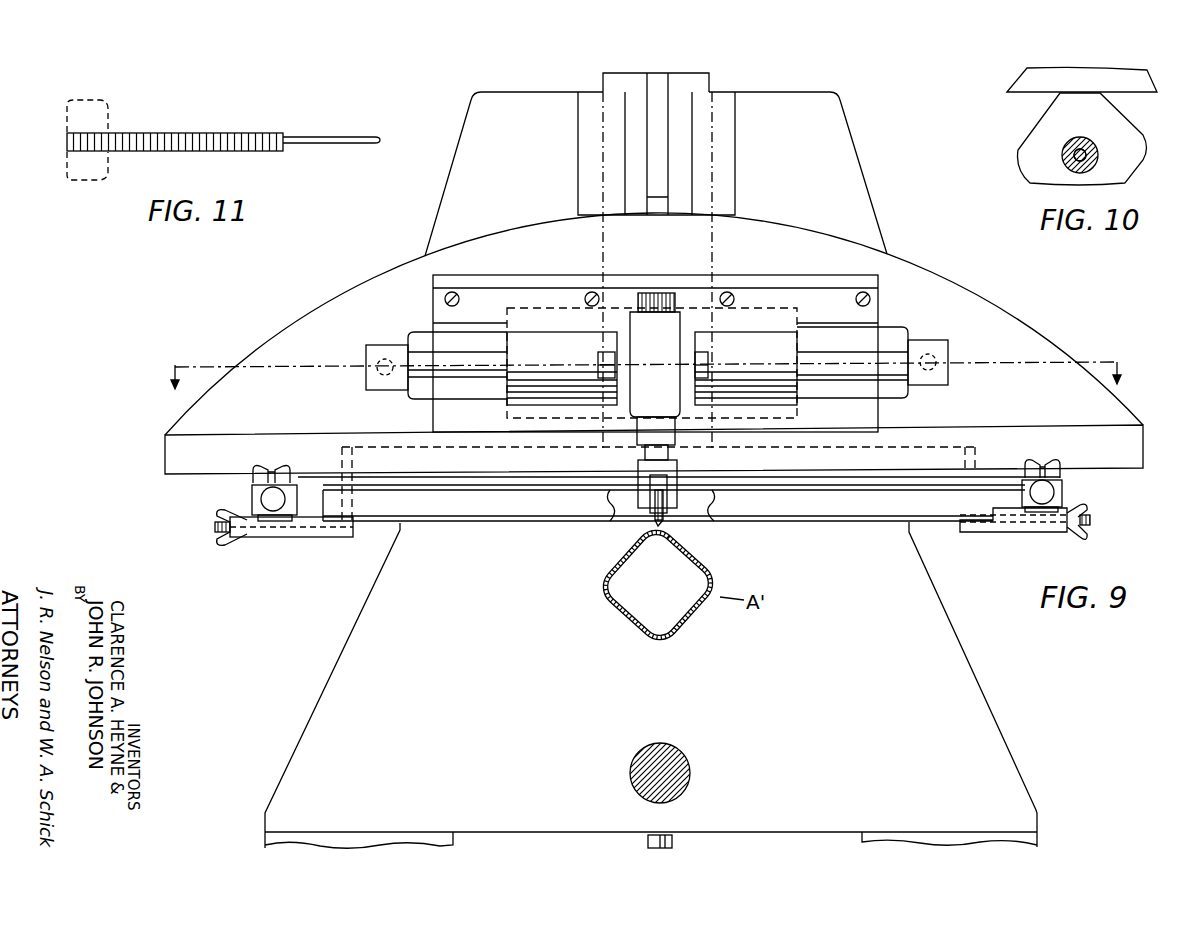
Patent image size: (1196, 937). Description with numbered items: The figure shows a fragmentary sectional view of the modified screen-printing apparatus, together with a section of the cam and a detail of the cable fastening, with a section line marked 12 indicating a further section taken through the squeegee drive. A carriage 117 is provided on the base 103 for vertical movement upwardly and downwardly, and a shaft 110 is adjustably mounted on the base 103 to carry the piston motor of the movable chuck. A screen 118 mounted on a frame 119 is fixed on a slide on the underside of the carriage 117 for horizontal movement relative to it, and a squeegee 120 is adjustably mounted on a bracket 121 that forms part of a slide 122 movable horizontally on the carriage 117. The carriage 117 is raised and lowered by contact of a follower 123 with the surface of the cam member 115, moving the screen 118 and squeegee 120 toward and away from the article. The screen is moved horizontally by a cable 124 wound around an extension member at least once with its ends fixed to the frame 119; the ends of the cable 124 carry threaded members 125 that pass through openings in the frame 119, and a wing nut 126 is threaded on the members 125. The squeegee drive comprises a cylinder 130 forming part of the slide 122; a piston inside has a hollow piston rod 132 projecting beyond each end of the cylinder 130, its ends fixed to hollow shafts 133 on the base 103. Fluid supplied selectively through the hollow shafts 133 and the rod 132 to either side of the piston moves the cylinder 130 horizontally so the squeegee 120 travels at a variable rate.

In FIG. 9, the base 103 is at (975, 728).
In FIG. 9, the shaft 110 is at (672, 752).
In FIG. 10, the cam member 115 is at (1120, 165).
In FIG. 9, the carriage 117 is at (852, 163).
In FIG. 9, the screen 118 is at (625, 526).
In FIG. 9, the frame 119 is at (1008, 500).
In FIG. 9, the squeegee 120 is at (665, 521).
In FIG. 9, the bracket 121 is at (686, 320).
In FIG. 9, the slide 122 is at (785, 315).
In FIG. 10, the follower 123 is at (1135, 83).
In FIG. 9, the cable 124 is at (675, 641).
In FIG. 11, the threaded members 125 is at (208, 132).
In FIG. 9, the wing nut 126 is at (233, 515).
In FIG. 9, the cylinder 130 is at (725, 359).
In FIG. 9, the hollow piston rod 132 is at (943, 313).
In FIG. 9, the hollow shafts 133 is at (950, 357).
In FIG. 9, the section line 12- 12 is at (648, 376).